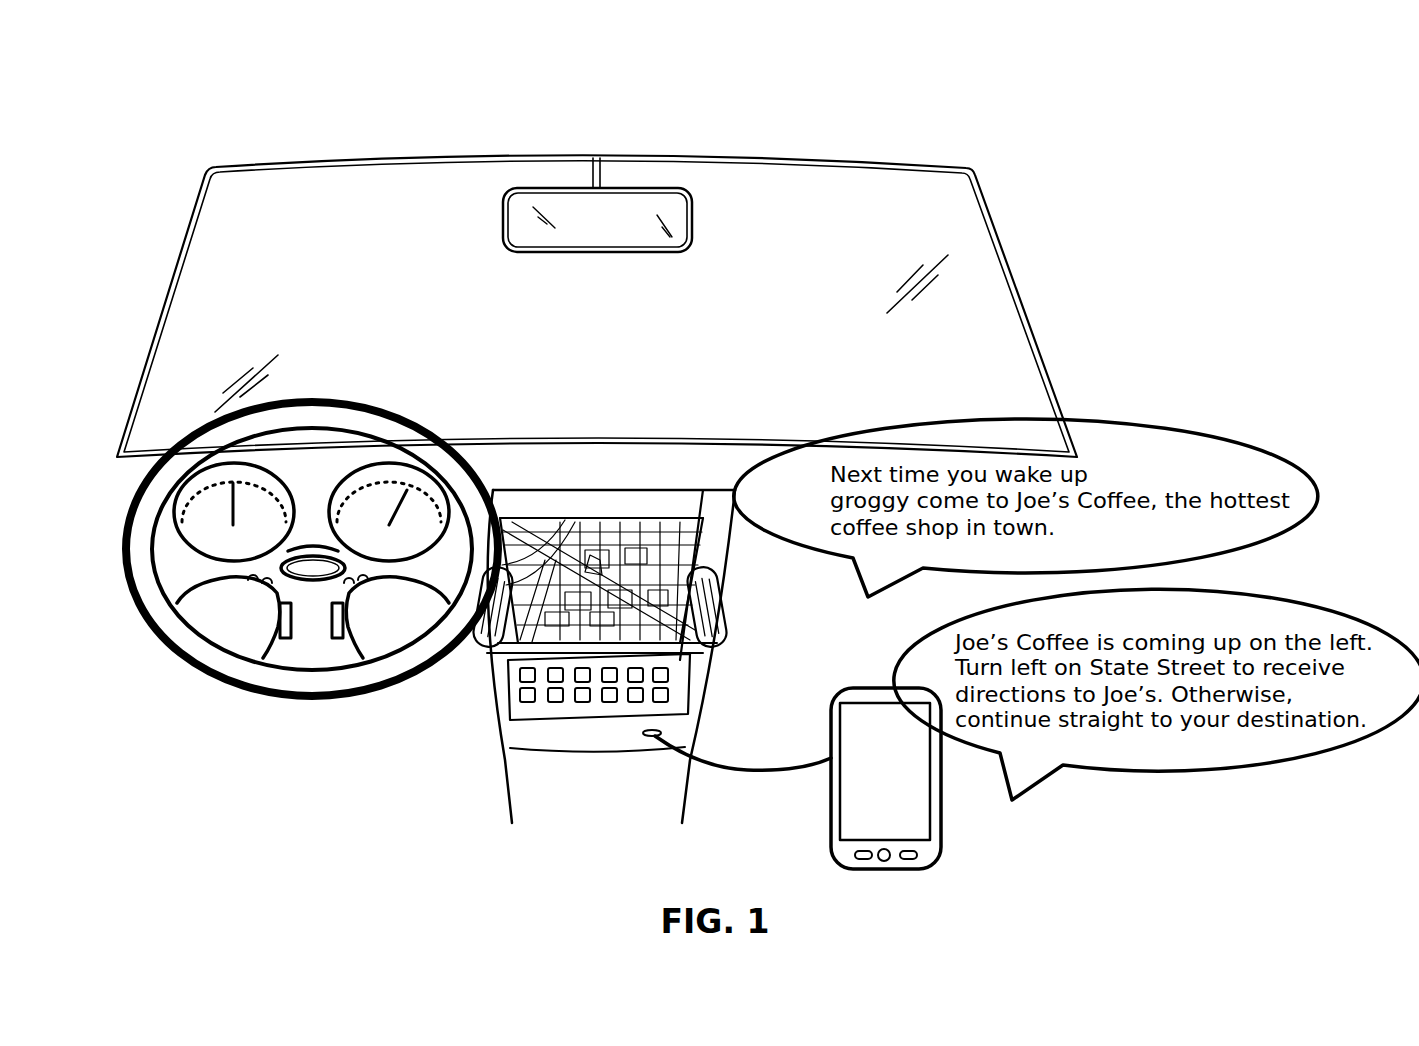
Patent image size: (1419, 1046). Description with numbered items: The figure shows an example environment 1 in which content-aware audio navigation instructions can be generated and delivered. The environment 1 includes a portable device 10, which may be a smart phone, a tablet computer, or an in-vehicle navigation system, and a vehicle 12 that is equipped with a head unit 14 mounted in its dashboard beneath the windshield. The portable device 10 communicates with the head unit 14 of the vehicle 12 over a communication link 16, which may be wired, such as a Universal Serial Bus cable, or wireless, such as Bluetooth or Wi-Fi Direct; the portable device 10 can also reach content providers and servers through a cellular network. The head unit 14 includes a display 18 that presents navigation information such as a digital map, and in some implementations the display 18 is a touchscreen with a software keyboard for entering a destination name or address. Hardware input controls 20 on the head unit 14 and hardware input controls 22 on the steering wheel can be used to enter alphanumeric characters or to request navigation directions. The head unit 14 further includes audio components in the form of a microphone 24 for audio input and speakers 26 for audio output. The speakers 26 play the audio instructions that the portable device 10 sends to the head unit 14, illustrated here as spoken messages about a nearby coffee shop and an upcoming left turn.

The environment 1 is at (315, 110).
The portable device 10 is at (836, 693).
The vehicle 12 is at (108, 425).
The head unit 14 is at (646, 480).
The communication link 16 is at (741, 756).
The display 18 is at (684, 540).
The hardware input controls 20 is at (512, 686).
The hardware input controls 22 is at (278, 628).
The microphone 24 is at (479, 648).
The speakers 26 is at (710, 605).